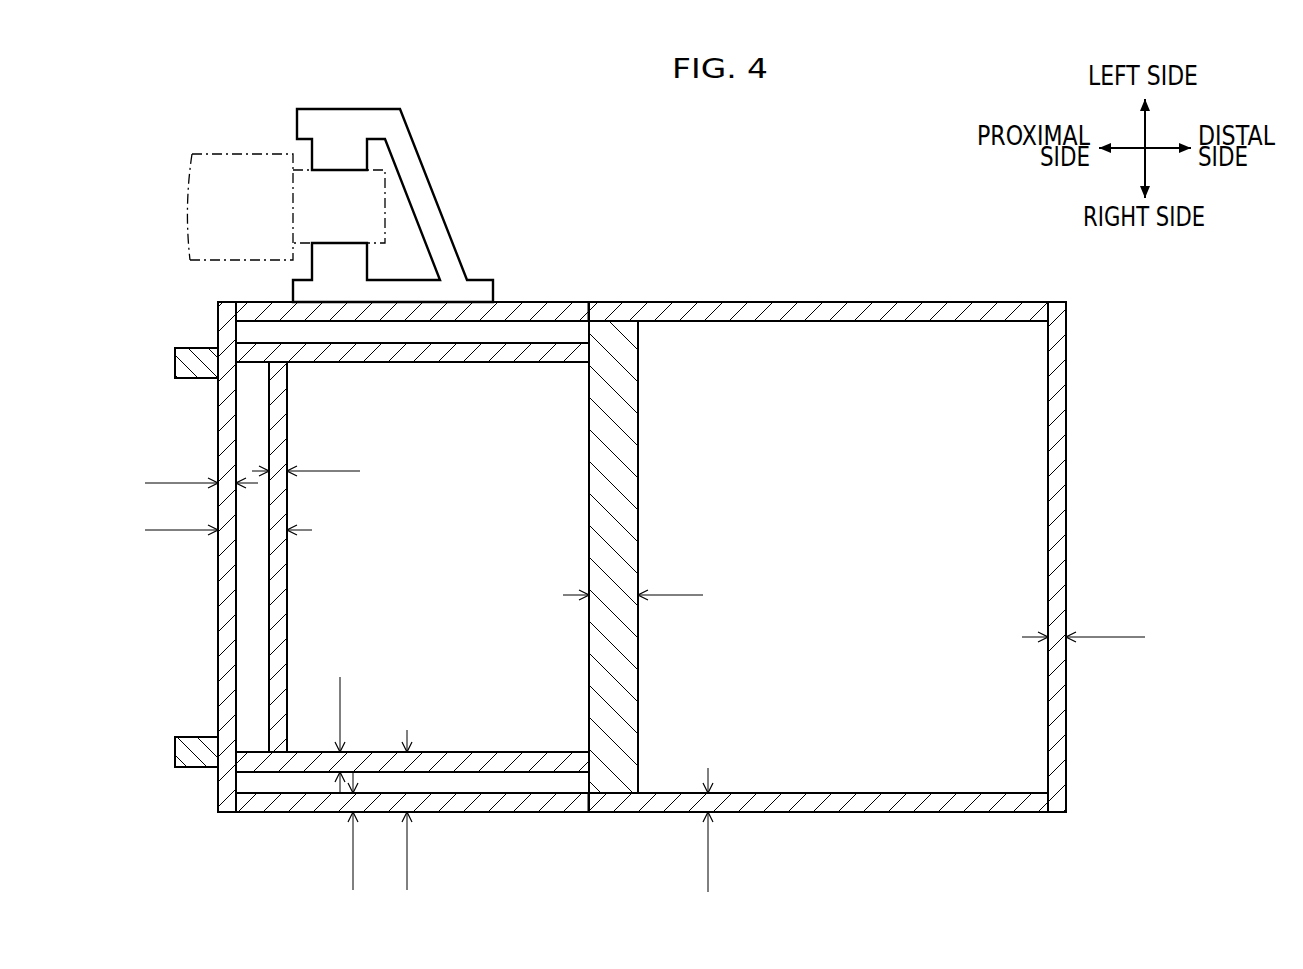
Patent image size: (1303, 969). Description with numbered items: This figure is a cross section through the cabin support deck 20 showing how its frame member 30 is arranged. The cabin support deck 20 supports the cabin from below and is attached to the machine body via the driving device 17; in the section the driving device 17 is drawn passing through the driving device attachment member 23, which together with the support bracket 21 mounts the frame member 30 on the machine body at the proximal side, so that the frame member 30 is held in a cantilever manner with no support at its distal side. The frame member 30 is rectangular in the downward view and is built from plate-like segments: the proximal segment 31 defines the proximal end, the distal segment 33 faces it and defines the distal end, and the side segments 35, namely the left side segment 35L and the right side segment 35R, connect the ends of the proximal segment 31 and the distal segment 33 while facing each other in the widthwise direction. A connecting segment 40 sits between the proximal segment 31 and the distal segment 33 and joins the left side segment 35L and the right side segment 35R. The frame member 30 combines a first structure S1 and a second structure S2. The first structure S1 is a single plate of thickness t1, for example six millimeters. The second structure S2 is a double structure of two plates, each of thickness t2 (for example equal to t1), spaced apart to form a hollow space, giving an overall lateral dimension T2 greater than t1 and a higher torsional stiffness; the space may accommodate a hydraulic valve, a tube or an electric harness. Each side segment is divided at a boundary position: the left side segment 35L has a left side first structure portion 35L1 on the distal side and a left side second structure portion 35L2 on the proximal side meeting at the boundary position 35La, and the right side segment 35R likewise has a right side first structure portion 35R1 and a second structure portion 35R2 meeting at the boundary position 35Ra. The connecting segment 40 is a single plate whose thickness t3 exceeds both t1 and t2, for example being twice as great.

The cabin support deck 20 is at (197, 131).
The driving device 17 is at (195, 212).
The driving device attachment member 23 is at (445, 241).
The frame member 30 is at (221, 323).
The support bracket 21 is at (193, 375).
The proximal segment 31 is at (250, 820).
The distal segment 33 is at (1055, 820).
The side wall 35 is at (715, 557).
The left side segment 35L is at (1075, 310).
The right side segment 35R is at (1075, 803).
The left side first structure portion 35L1 is at (848, 296).
The left side second structure portion 35L2 is at (402, 370).
The right side first structure portion 35R1 is at (848, 820).
The right side second structure portion 35R2 is at (440, 745).
The boundary position 35La is at (587, 313).
The boundary position 35Ra is at (588, 813).
The connecting segment 40 is at (632, 515).
The first structure S1 is at (715, 378).
The second structure S2 is at (523, 380).
The thickness t1 is at (926, 750).
The thickness t2 is at (262, 667).
The lateral dimension T2 is at (289, 696).
The thickness t3 is at (633, 579).